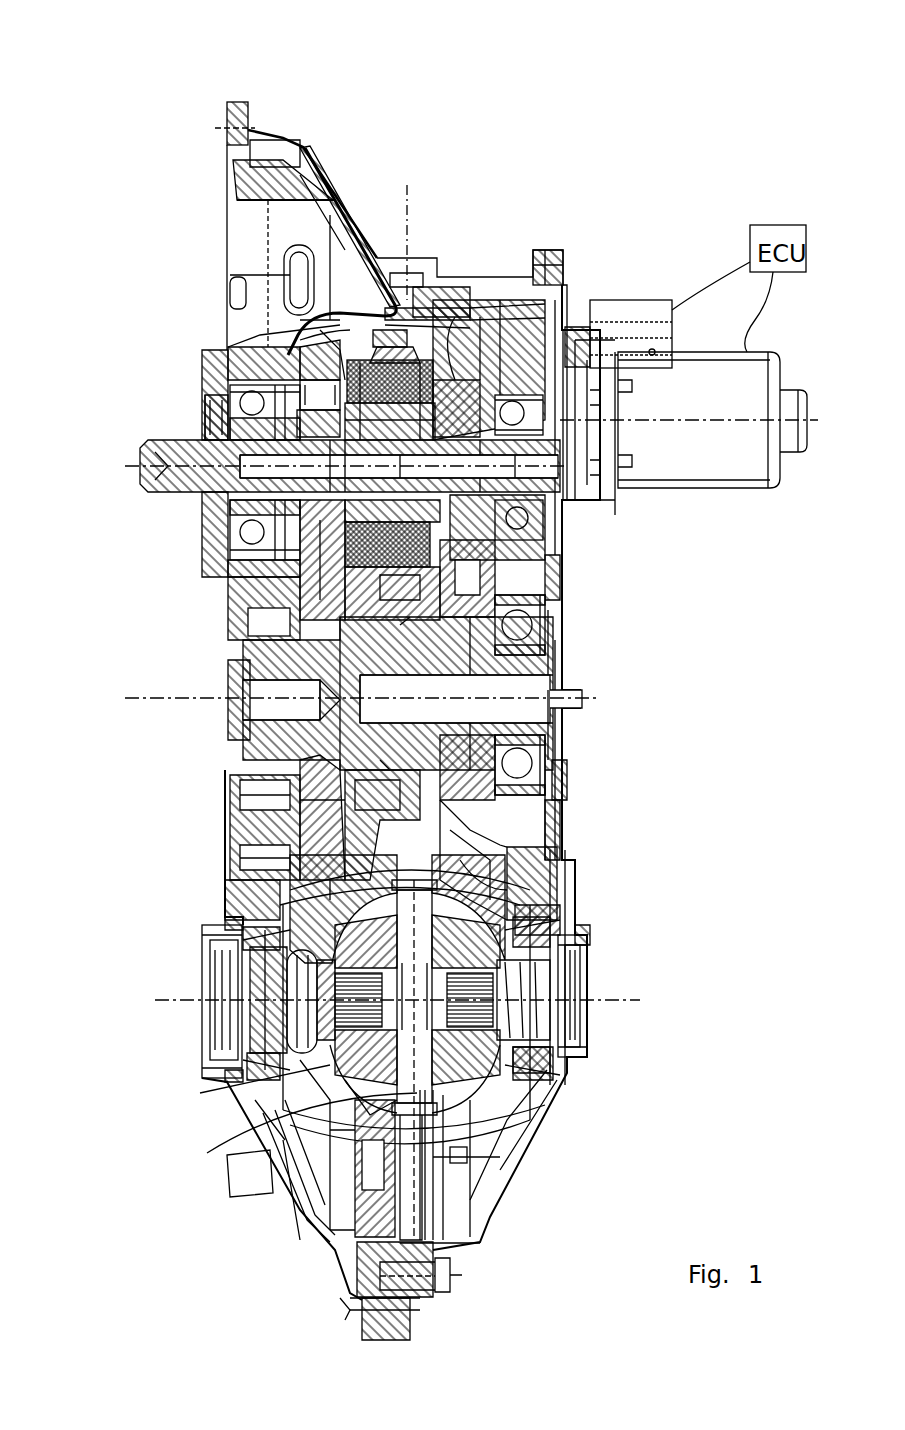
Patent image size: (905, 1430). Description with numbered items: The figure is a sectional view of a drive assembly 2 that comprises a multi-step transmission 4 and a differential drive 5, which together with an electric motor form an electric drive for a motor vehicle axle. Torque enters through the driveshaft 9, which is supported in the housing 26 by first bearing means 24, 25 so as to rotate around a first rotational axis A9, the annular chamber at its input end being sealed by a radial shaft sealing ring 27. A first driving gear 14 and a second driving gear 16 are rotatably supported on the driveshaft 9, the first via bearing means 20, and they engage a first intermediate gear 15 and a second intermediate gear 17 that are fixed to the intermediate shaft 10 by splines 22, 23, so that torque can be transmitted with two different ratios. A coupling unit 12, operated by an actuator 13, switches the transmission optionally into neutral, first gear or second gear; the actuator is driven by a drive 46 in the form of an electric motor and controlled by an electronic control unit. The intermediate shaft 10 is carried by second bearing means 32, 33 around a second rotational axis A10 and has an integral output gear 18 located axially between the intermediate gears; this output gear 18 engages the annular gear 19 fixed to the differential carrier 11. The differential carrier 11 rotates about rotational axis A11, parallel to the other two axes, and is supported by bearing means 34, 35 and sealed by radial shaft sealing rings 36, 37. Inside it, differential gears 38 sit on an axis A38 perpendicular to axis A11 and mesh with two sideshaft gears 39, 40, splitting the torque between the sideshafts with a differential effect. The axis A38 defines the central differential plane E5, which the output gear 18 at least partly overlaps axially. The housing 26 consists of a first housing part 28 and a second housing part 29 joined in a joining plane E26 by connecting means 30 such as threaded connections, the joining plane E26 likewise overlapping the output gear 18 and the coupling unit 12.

The drive assembly 2 is at (428, 110).
The multi-step transmission 4 is at (478, 262).
The differential drive 5 is at (412, 1073).
The driveshaft 9 is at (160, 440).
The intermediate shaft 10 is at (290, 655).
The differential carrier 11 is at (525, 895).
The coupling unit 12 is at (458, 330).
The actuator 13 is at (636, 290).
The first driving gear 14 is at (300, 357).
The first intermediate gear 15 is at (327, 577).
The second driving gear 16 is at (470, 395).
The second intermediate gear 17 is at (468, 568).
The output gear 18 is at (453, 613).
The annular gear 19 is at (230, 365).
The bearing means 20 is at (478, 385).
The splines 22 is at (265, 772).
The splines 23 is at (530, 778).
The first bearing means 24 is at (240, 530).
The first bearing means 25 is at (540, 520).
The housing 26 is at (340, 185).
The radial shaft sealing ring 27 is at (210, 440).
The first housing part 28 is at (296, 180).
The second housing part 29 is at (570, 905).
The connecting means 30 is at (448, 1267).
The second bearing means 32 is at (250, 760).
The second bearing means 33 is at (545, 765).
The bearing means 34 is at (230, 925).
The bearing means 35 is at (590, 930).
The radial shaft sealing ring 36 is at (203, 950).
The radial shaft sealing ring 37 is at (580, 955).
The differential gears 38 is at (443, 1087).
The sideshaft gear 39 is at (347, 1048).
The sideshaft gear 40 is at (520, 1065).
The drive 46 is at (737, 483).
The first rotational axis A9 is at (130, 466).
The second rotational axis A10 is at (205, 698).
The rotational axis A11 is at (168, 1000).
The axis A38 is at (245, 1128).
The joining plane E26 is at (405, 190).
The central differential plane E5 is at (262, 1142).